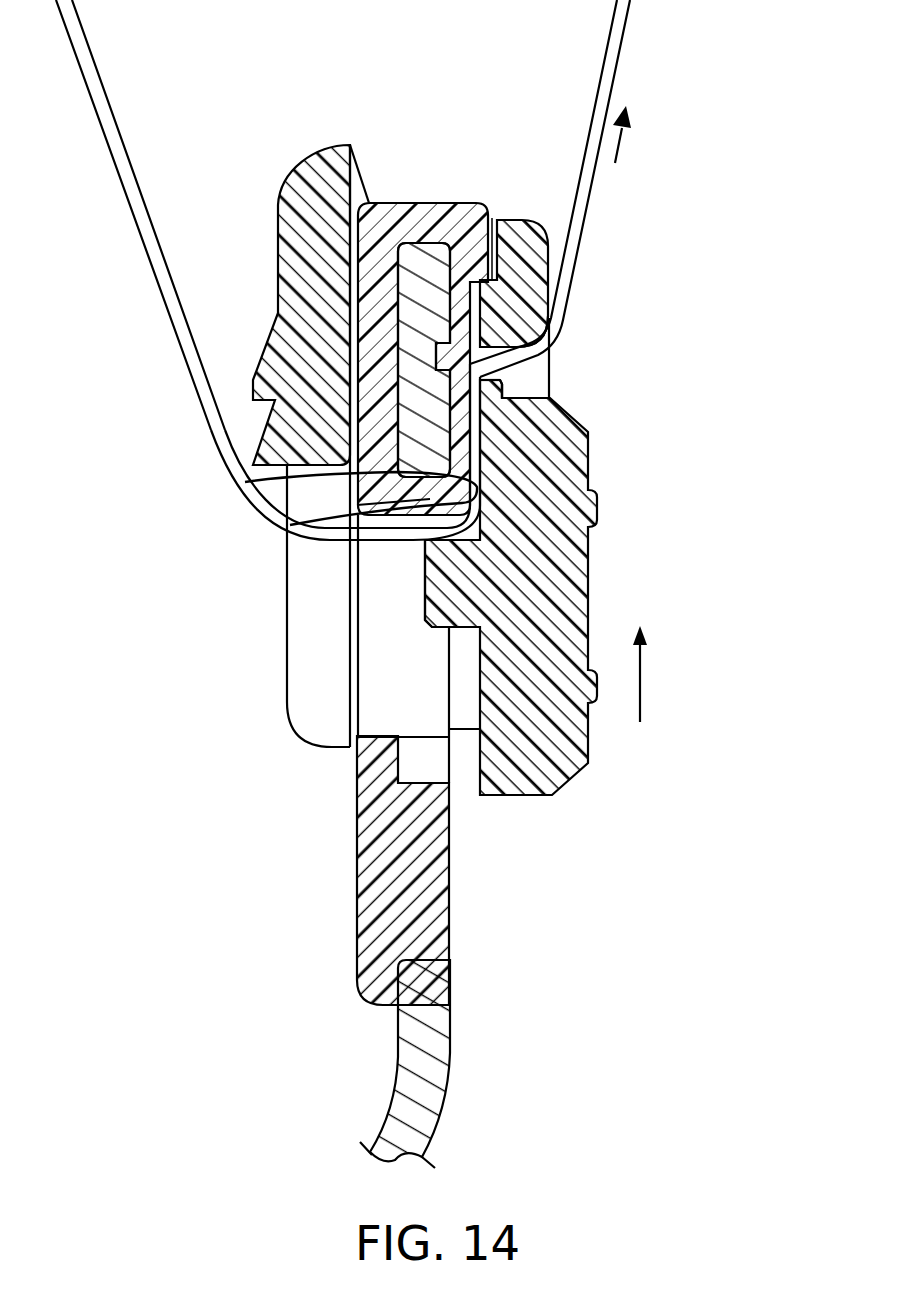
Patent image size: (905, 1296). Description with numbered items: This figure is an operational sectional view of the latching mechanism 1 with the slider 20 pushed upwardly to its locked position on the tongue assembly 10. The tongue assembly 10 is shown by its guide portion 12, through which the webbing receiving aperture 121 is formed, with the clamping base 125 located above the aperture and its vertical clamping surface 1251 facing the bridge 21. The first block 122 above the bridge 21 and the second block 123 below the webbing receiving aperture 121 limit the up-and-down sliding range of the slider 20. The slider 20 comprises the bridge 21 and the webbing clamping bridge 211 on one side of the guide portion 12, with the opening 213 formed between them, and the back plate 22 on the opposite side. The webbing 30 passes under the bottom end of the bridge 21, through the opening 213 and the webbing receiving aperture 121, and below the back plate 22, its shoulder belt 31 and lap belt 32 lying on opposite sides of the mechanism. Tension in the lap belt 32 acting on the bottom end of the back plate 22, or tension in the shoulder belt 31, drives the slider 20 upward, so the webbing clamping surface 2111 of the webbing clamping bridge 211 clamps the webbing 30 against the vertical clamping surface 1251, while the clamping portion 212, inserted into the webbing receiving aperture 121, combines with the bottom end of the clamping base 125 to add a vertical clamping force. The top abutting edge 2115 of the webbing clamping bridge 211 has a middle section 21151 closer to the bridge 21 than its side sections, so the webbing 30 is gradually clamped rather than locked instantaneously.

The latching mechanism 1 is at (235, 933).
The tongue assembly 10 is at (368, 1087).
The guide portion 12 is at (418, 185).
The webbing receiving aperture 121 is at (400, 682).
The first block 122 is at (474, 237).
The second block 123 is at (413, 783).
The clamping base 125 is at (290, 525).
The vertical clamping surface 1251 is at (245, 482).
The slider 20 is at (280, 138).
The bridge 21 is at (522, 245).
The webbing clamping bridge 211 is at (555, 600).
The webbing clamping surface 2111 is at (479, 450).
The top abutting edge 2115 is at (552, 388).
The middle section 21151 is at (515, 386).
The clamping portion 212 is at (457, 553).
The opening 213 is at (535, 354).
The back plate 22 is at (298, 277).
The webbing 30 is at (394, 270).
The shoulder belt 31 is at (608, 77).
The lap belt 32 is at (147, 233).